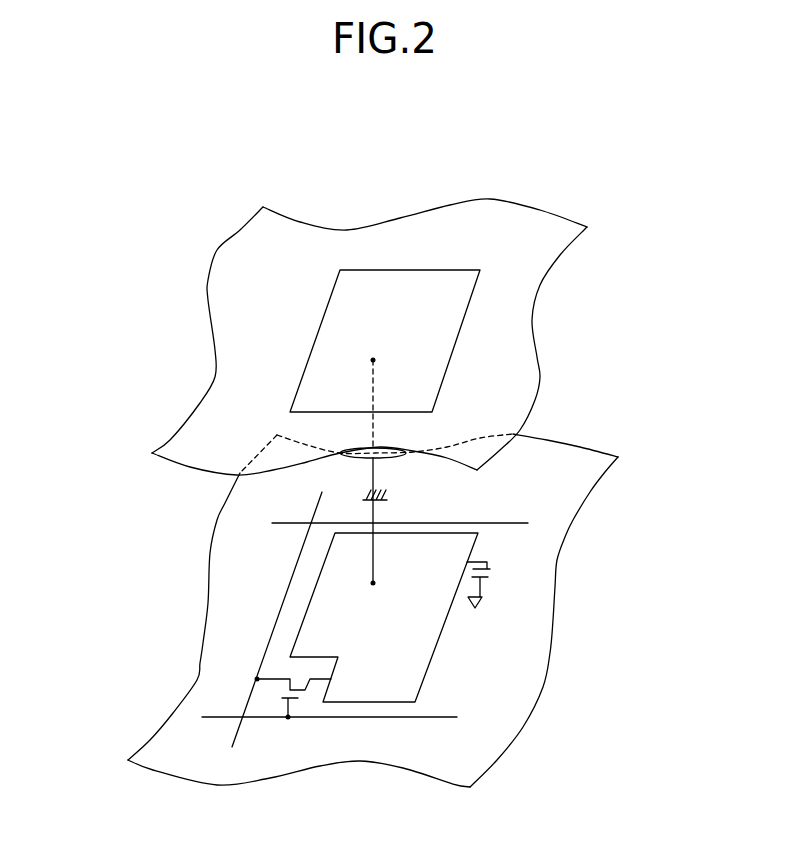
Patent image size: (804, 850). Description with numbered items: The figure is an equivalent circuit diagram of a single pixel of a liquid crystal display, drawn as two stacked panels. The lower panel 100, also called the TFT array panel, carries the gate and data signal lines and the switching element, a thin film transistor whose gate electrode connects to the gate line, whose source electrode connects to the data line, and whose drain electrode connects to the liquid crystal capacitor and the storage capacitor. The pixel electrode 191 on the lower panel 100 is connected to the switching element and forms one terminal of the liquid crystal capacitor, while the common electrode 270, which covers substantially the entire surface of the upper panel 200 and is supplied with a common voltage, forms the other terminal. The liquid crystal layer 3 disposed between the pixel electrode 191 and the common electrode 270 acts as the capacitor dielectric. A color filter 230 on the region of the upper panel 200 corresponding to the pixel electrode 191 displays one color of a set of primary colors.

The liquid crystal layer 3 is at (148, 533).
The lower panel 100 is at (573, 595).
The pixel electrode 191 is at (433, 655).
The upper panel 200 is at (553, 360).
The color filter 230 is at (452, 353).
The common electrode 270 is at (533, 315).